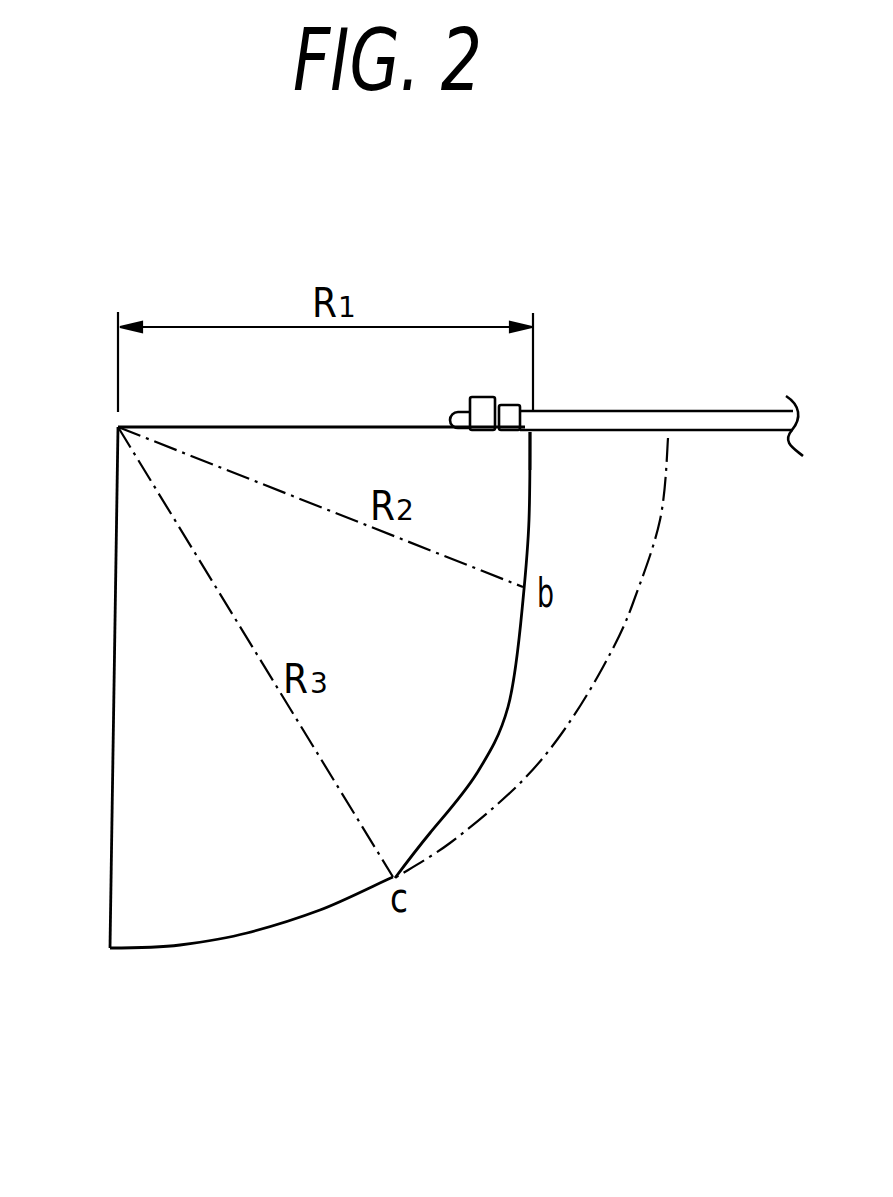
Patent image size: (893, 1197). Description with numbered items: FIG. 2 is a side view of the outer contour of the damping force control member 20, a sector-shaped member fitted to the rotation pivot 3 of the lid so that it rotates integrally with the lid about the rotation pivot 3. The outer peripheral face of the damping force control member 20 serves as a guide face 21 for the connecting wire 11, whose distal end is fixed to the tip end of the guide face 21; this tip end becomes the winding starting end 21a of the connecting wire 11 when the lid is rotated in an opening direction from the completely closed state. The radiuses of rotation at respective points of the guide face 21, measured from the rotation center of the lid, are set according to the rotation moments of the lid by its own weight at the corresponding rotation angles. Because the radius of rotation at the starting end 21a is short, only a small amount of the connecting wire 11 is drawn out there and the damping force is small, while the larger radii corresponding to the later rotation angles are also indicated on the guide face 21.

The rotation pivot 3 is at (118, 427).
The connecting wire 11 is at (637, 412).
The damping force control member 20 is at (253, 957).
The guide face 21 is at (508, 707).
The winding starting end 21a is at (535, 432).